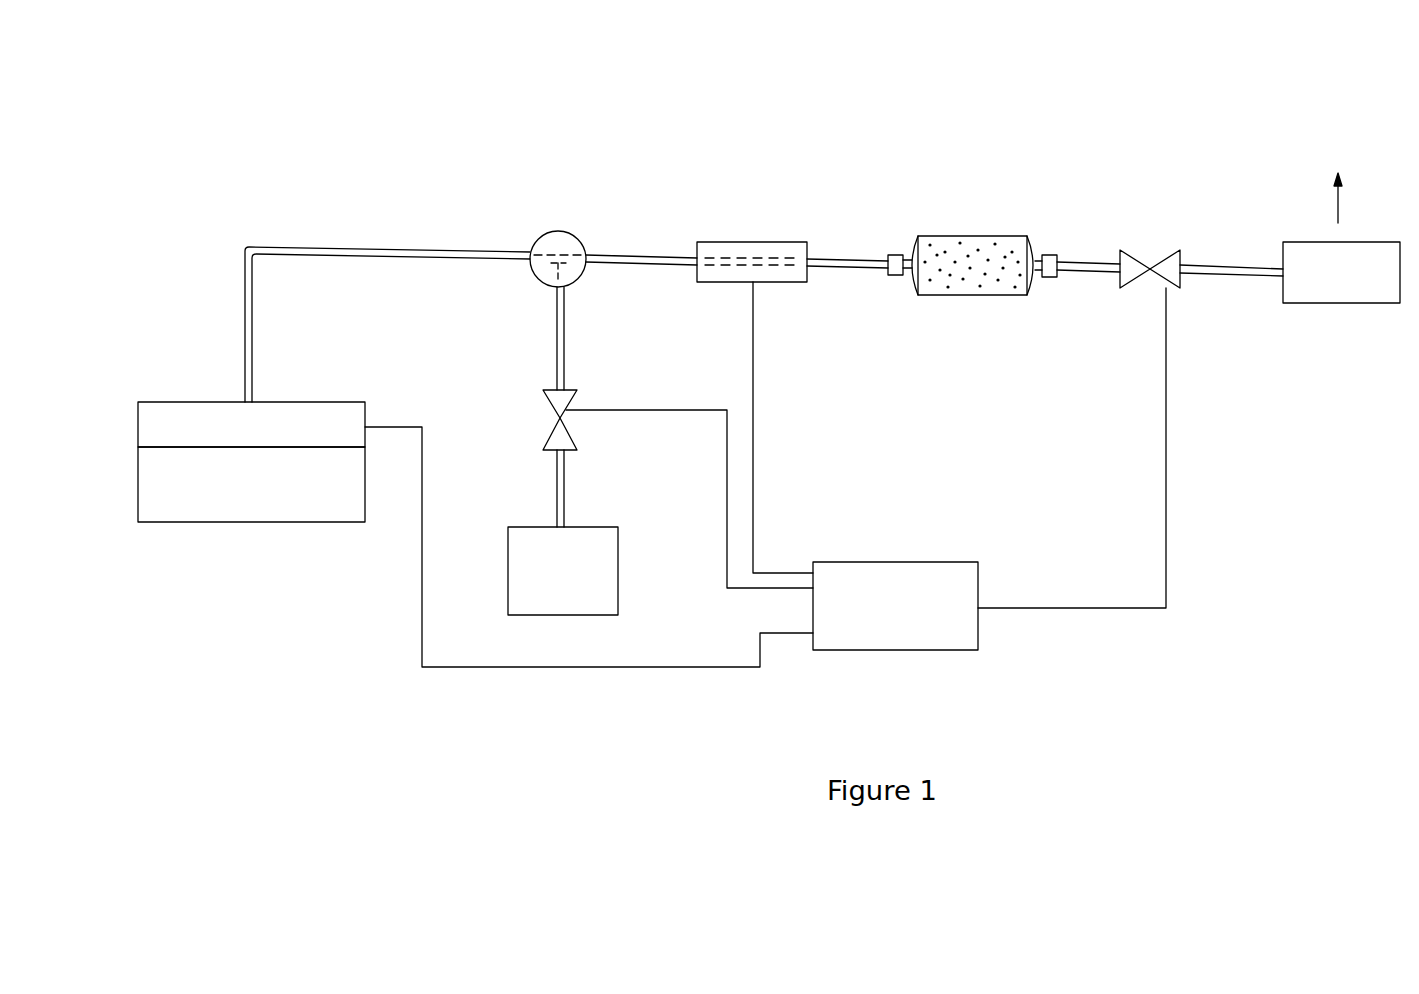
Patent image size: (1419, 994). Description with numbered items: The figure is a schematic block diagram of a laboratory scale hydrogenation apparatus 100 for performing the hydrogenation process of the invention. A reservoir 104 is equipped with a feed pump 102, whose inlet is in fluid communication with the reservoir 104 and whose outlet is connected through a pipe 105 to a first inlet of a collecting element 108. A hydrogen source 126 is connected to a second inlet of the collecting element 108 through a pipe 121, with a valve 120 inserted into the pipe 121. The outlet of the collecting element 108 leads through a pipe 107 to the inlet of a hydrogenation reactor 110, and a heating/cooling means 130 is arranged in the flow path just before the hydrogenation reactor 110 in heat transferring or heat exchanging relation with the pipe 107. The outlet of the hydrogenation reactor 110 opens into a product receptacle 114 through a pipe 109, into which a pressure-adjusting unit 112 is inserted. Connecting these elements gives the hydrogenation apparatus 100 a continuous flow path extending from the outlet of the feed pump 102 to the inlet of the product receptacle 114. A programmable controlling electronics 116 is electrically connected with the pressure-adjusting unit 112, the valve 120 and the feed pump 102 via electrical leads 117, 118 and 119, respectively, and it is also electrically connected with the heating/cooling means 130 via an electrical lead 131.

The hydrogenation apparatus 100 is at (188, 152).
The feed pump 102 is at (251, 425).
The reservoir 104 is at (251, 484).
The pipe 105 is at (327, 248).
The pipe 107 is at (636, 255).
The collecting element 108 is at (560, 238).
The pipe 109 is at (1087, 273).
The hydrogenation reactor 110 is at (972, 239).
The pressure-adjusting unit 112 is at (1165, 262).
The product receptacle 114 is at (1290, 238).
The controlling electronics 116 is at (895, 606).
The electrical lead 117 is at (1168, 441).
The electrical lead 118 is at (727, 446).
The electrical lead 119 is at (424, 494).
The valve 120 is at (557, 428).
The pipe 121 is at (556, 342).
The hydrogen source 126 is at (563, 571).
The heating/cooling means 130 is at (756, 243).
The electrical lead 131 is at (756, 384).